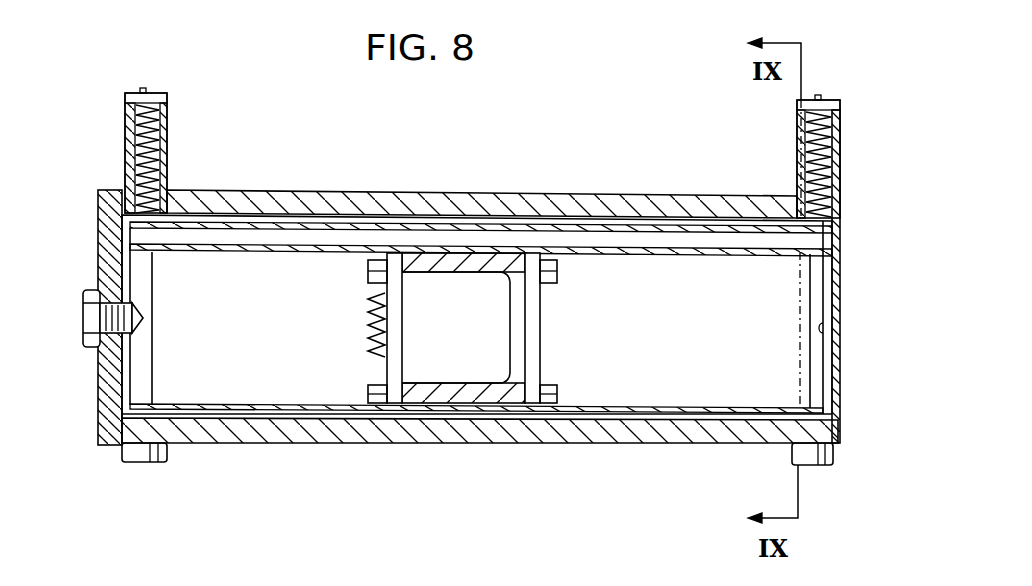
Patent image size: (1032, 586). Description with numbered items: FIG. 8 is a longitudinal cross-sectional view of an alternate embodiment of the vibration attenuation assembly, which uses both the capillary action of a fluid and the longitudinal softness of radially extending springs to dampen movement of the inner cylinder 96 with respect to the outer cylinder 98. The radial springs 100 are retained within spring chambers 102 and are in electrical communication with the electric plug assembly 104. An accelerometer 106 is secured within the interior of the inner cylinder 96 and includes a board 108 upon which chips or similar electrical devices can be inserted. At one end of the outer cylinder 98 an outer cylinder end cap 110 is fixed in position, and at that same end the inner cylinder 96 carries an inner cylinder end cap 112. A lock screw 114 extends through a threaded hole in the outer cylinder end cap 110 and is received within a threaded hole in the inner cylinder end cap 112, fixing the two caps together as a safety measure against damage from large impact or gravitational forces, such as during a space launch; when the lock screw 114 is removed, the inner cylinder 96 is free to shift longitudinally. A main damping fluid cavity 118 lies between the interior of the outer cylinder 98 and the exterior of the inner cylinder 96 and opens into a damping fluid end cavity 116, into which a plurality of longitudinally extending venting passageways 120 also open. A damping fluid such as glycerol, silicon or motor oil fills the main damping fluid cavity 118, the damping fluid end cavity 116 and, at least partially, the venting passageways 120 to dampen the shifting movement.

The inner cylinder 96 is at (427, 411).
The outer cylinder 98 is at (543, 195).
The radial springs 100 is at (153, 133).
The spring chambers 102 is at (167, 157).
The electric plug assembly 104 is at (143, 88).
The accelerometer 106 is at (476, 337).
The board 108 is at (541, 350).
The outer cylinder end cap 110 is at (98, 200).
The inner cylinder end cap 112 is at (127, 367).
The lock screw 114 is at (83, 321).
The damping fluid end cavity 116 is at (115, 246).
The main damping fluid cavity 118 is at (688, 222).
The venting passageways 120 is at (608, 240).